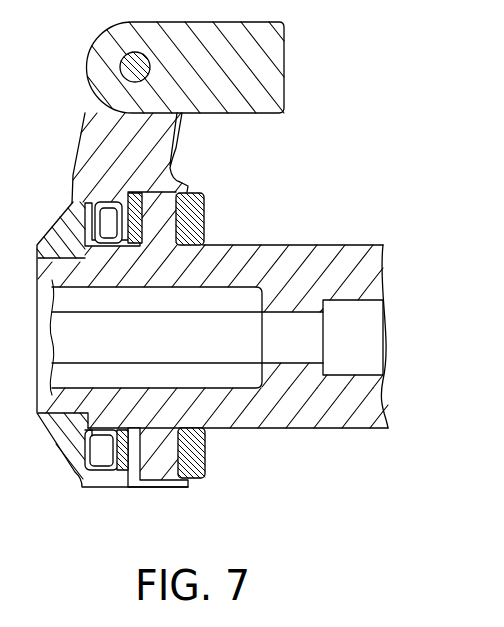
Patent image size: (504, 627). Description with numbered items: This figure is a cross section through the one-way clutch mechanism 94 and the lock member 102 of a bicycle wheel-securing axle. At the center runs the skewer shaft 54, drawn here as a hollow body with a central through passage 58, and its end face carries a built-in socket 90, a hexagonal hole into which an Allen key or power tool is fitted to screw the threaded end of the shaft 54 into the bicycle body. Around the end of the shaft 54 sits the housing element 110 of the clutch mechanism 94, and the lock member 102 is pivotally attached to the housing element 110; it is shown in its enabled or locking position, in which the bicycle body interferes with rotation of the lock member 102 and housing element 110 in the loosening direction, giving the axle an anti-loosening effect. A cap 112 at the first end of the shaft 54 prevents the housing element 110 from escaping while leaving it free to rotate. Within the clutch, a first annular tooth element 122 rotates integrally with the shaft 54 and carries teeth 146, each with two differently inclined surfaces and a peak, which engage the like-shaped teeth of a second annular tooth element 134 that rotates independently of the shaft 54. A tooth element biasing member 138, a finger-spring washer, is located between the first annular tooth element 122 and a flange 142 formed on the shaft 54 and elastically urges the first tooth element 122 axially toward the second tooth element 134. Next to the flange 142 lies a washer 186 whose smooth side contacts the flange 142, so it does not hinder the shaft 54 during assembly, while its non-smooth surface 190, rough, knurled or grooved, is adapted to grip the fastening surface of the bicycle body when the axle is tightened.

The shaft 54 is at (305, 428).
The central through passage 58 is at (333, 373).
The built-in socket 90 is at (128, 305).
The one-way clutch mechanism 94 is at (322, 150).
The lock member 102 is at (284, 70).
The housing element 110 is at (80, 132).
The cap 112 is at (62, 465).
The first annular tooth element 122 is at (108, 463).
The second annular tooth element 134 is at (93, 467).
The tooth element biasing member 138 is at (120, 463).
The flange 142 is at (150, 470).
The teeth 146 is at (92, 200).
The washer 186 is at (190, 195).
The non-smooth surface 190 is at (205, 222).